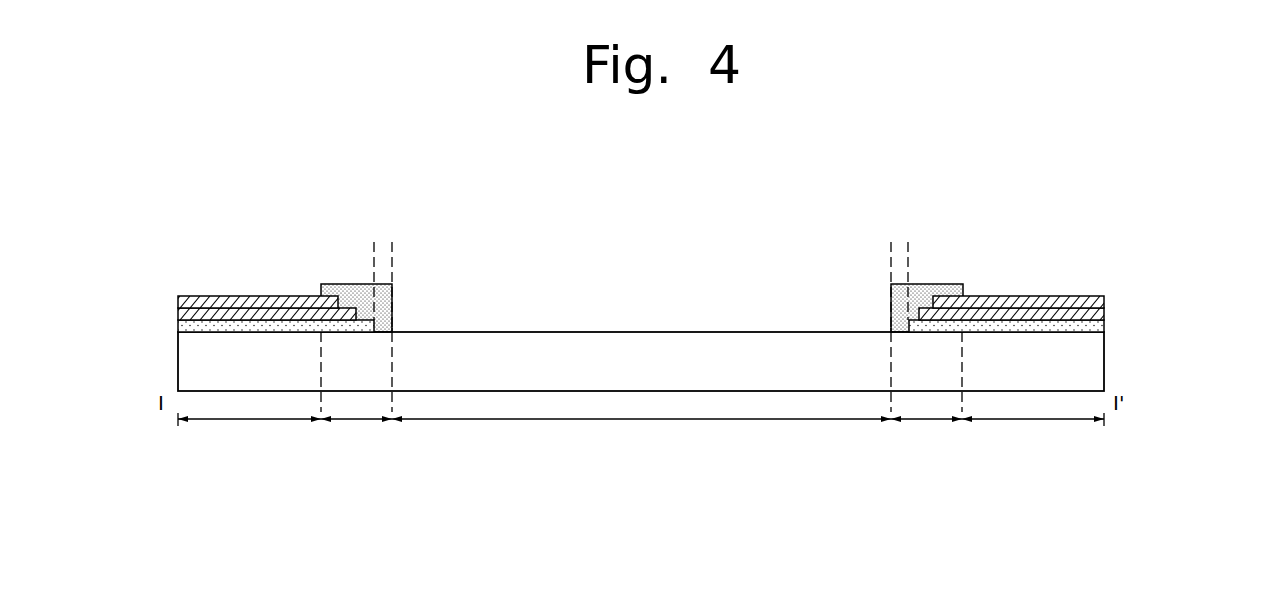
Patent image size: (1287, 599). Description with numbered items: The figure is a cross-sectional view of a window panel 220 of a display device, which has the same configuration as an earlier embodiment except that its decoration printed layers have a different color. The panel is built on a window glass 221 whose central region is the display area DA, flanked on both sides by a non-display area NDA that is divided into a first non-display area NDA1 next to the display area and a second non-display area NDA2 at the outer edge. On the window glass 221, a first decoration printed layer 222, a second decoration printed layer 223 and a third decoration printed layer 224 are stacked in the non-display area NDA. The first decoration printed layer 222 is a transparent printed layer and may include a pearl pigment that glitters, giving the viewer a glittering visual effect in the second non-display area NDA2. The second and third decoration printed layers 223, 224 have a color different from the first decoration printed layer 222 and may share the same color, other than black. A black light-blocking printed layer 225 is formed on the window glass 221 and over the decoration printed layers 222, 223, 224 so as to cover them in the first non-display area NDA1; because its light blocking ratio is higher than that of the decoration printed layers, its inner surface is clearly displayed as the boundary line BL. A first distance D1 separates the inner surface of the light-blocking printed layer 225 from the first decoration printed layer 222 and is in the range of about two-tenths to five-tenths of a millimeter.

The window panel 220 is at (717, 320).
The window glass 221 is at (1097, 367).
The first decoration printed layer 222 is at (1097, 328).
The second decoration printed layer 223 is at (1097, 314).
The third decoration printed layer 224 is at (1098, 300).
The light-blocking printed layer 225 is at (934, 292).
The boundary line BL is at (398, 329).
The first distance D1 is at (412, 248).
The display area DA is at (642, 442).
The non-display area NDA is at (385, 452).
The first non-display area NDA1 is at (641, 442).
The second non-display area NDA2 is at (643, 442).